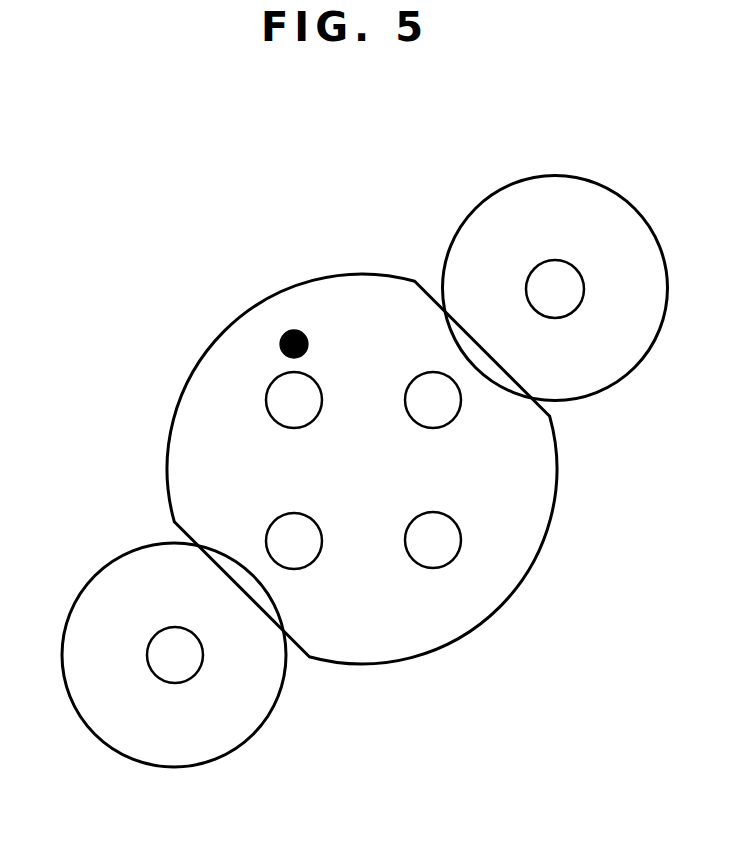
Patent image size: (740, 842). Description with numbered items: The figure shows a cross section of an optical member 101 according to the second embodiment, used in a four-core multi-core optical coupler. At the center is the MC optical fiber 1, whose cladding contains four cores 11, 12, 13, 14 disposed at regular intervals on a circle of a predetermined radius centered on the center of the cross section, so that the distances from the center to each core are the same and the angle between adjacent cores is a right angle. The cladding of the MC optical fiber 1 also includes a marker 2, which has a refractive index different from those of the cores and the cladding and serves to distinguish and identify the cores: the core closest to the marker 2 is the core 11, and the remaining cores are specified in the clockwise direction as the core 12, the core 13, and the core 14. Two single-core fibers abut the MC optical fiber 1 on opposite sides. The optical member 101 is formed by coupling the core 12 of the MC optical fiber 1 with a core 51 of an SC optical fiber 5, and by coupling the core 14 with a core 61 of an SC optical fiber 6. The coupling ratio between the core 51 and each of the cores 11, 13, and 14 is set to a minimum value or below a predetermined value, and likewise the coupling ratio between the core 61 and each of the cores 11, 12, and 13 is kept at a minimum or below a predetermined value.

The optical member 101 is at (147, 318).
The MC optical fiber 1 is at (249, 311).
The marker 2 is at (309, 345).
The core 11 is at (267, 402).
The core 12 is at (405, 396).
The core 13 is at (462, 540).
The core 14 is at (267, 541).
The SC optical fiber 5 is at (627, 202).
The core 51 is at (585, 285).
The SC optical fiber 6 is at (67, 615).
The core 61 is at (147, 655).